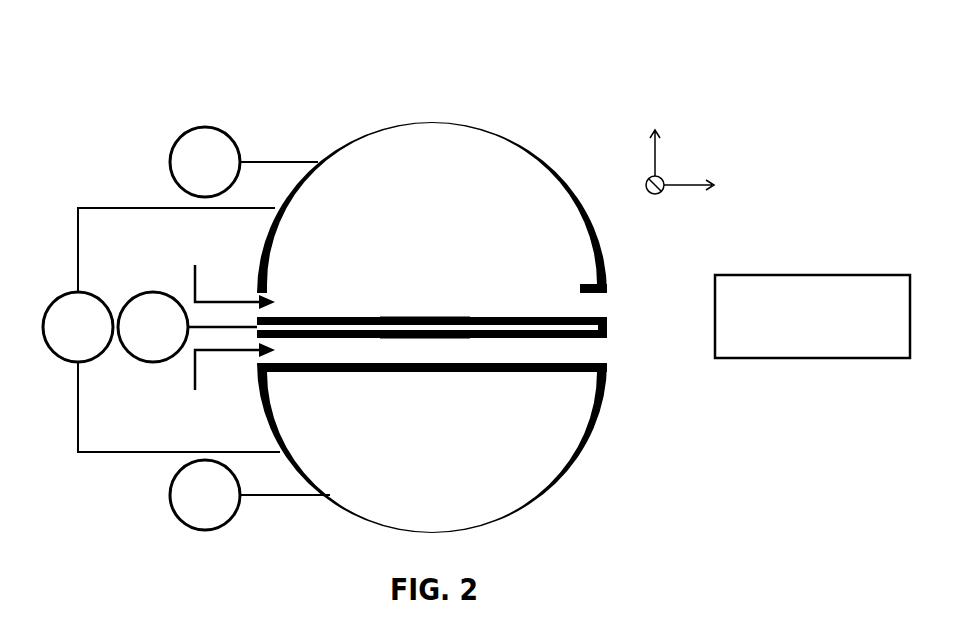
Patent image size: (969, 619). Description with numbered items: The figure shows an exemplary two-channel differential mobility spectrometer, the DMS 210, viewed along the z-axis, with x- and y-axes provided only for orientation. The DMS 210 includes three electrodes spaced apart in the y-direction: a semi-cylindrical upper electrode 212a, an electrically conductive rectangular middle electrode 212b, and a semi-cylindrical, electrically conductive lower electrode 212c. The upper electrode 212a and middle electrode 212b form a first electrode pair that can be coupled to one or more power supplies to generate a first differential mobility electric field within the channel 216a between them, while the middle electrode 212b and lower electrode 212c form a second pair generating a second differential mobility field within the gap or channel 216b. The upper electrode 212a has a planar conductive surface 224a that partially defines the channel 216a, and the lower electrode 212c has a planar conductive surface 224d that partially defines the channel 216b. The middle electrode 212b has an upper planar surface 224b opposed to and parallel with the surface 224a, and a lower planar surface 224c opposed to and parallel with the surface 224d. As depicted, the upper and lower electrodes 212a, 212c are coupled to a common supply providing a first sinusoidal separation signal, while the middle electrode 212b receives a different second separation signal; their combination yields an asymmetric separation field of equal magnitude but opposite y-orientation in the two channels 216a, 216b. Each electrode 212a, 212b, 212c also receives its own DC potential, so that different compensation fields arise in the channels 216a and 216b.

The differential mobility spectrometer 210 is at (255, 100).
The upper electrode 212a is at (420, 150).
The middle electrode 212b is at (597, 323).
The lower electrode 212c is at (490, 483).
The channel 216a is at (425, 305).
The channel 216b is at (425, 349).
The planar conductive surface 224a is at (590, 290).
The upper planar surface 224b is at (503, 318).
The lower planar surface 224c is at (531, 337).
The planar conductive surface 224d is at (590, 367).